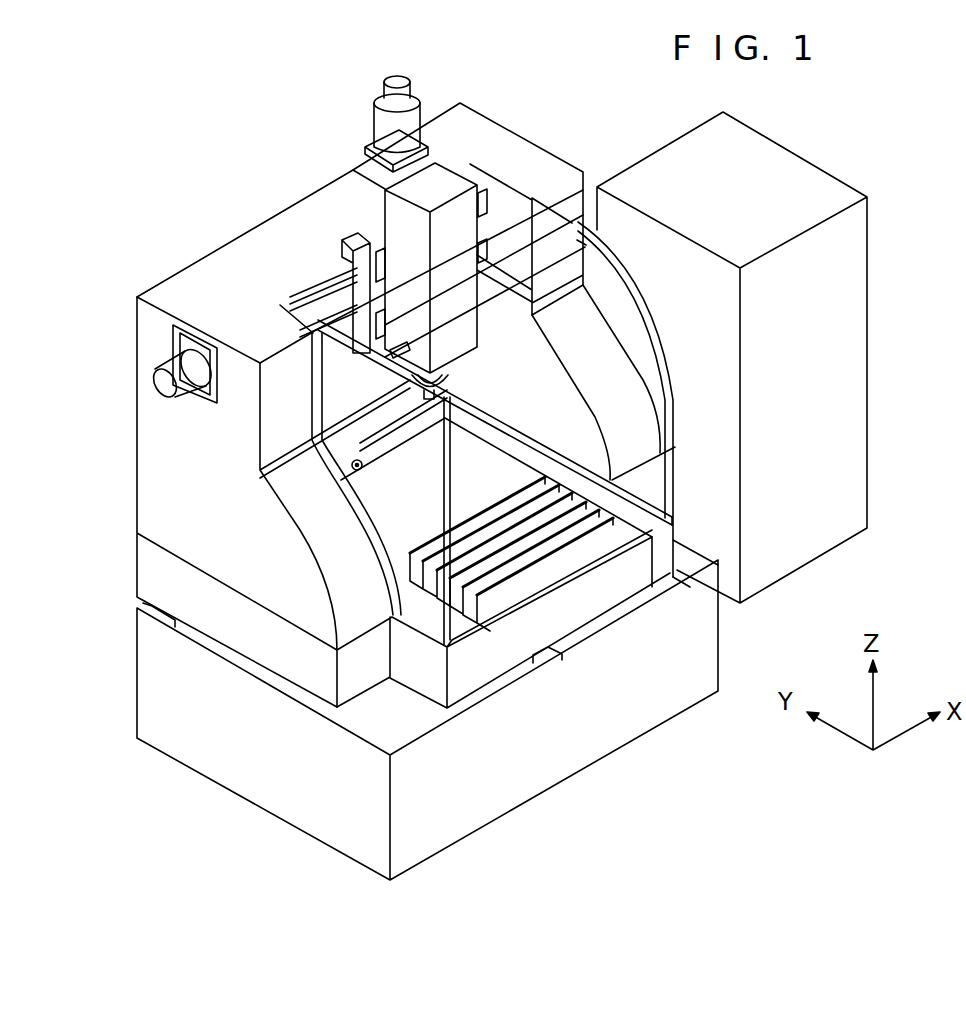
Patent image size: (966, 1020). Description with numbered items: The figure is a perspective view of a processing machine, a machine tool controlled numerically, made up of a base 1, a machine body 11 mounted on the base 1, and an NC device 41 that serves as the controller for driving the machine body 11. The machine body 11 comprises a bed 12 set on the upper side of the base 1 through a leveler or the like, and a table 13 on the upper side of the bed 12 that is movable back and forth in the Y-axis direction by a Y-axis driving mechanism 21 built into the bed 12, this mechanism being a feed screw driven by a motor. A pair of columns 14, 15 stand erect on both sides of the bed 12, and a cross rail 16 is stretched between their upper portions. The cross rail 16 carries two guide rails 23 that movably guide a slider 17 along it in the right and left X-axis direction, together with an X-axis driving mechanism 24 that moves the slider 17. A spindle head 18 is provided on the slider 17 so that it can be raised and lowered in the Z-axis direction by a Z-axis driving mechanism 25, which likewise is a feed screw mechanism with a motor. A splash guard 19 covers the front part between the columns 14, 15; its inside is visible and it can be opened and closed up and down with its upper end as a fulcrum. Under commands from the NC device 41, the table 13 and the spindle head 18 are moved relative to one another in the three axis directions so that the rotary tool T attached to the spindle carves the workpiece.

The base 1 is at (613, 735).
The machine body 11 is at (568, 148).
The bed 12 is at (597, 600).
The table 13 is at (487, 462).
The column 14 is at (152, 458).
The column 15 is at (593, 320).
The cross rail 16 is at (240, 247).
The slider 17 is at (348, 233).
The spindle head 18 is at (443, 173).
The splash guard 19 is at (647, 330).
The Y-axis driving mechanism 21 is at (356, 463).
The guide rails 23 is at (338, 293).
The X-axis driving mechanism 24 is at (160, 385).
The Z-axis driving mechanism 25 is at (405, 80).
The NC device 41 is at (820, 160).
The rotary tool T is at (447, 390).